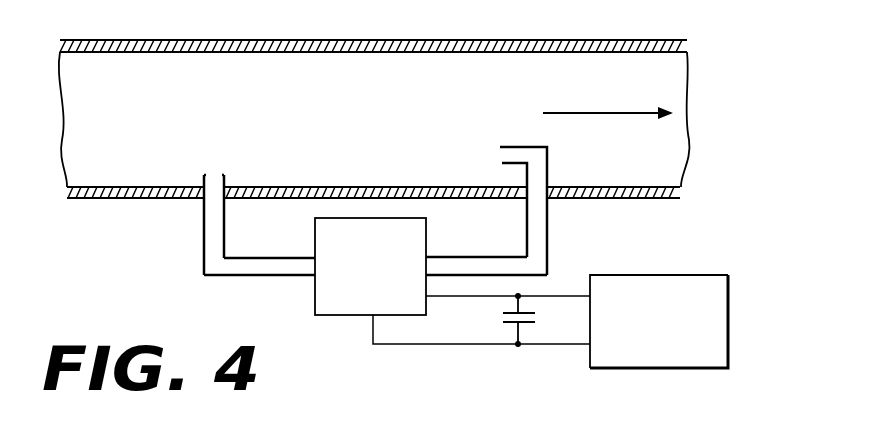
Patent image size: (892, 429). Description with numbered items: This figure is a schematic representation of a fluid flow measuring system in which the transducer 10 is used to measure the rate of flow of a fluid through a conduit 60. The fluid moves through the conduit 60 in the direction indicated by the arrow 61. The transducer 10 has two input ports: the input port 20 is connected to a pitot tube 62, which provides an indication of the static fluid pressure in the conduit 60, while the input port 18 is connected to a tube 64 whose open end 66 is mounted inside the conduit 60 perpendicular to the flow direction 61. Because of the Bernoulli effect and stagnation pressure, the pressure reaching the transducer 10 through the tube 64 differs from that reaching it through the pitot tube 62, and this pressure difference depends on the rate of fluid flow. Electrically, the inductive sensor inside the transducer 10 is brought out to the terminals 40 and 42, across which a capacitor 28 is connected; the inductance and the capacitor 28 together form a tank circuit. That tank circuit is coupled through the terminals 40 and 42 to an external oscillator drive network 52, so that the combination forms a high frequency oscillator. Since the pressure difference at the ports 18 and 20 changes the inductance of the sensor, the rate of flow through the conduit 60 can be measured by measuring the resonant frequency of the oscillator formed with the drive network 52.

The transducer 10 is at (380, 278).
The input port 18 is at (266, 267).
The input port 20 is at (455, 262).
The capacitor 28 is at (543, 320).
The terminal 40 is at (520, 296).
The terminal 42 is at (517, 345).
The oscillator drive network 52 is at (728, 318).
The conduit 60 is at (148, 60).
The arrow 61 is at (600, 112).
The pitot tube 62 is at (548, 157).
The tube 64 is at (204, 220).
The open end 66 is at (212, 176).